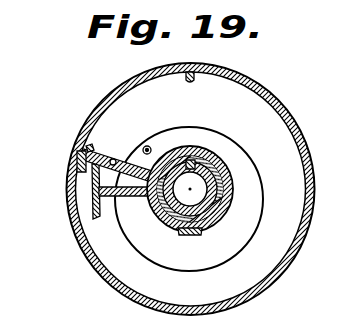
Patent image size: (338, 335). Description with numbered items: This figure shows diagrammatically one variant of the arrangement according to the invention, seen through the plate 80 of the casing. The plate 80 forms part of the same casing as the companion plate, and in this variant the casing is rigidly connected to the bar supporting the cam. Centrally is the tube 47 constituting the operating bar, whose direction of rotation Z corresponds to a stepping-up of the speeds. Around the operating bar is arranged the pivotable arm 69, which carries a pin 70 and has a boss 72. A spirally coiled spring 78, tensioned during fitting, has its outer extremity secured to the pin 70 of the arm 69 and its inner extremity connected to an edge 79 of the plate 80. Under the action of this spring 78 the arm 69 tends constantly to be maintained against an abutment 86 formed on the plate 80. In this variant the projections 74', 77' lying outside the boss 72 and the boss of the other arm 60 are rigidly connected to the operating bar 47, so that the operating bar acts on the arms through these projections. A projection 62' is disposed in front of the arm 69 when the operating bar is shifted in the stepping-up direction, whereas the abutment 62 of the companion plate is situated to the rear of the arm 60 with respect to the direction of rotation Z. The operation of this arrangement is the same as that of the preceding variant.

The plate 80 is at (288, 109).
The spirally coiled spring 78 is at (263, 197).
The boss 72 is at (214, 219).
The tube constituting the operating bar 47 is at (190, 234).
The direction of rotation of the operating bar Z is at (155, 200).
The pin 70 is at (114, 159).
The arm 69 is at (92, 142).
The abutment 86 is at (77, 162).
The projection 74' is at (57, 202).
The projection 77' is at (92, 240).
The edge of the plate 79 is at (149, 147).
The projection 62' is at (213, 90).
The abutment 62 is at (330, 202).
The arm 60 is at (327, 253).